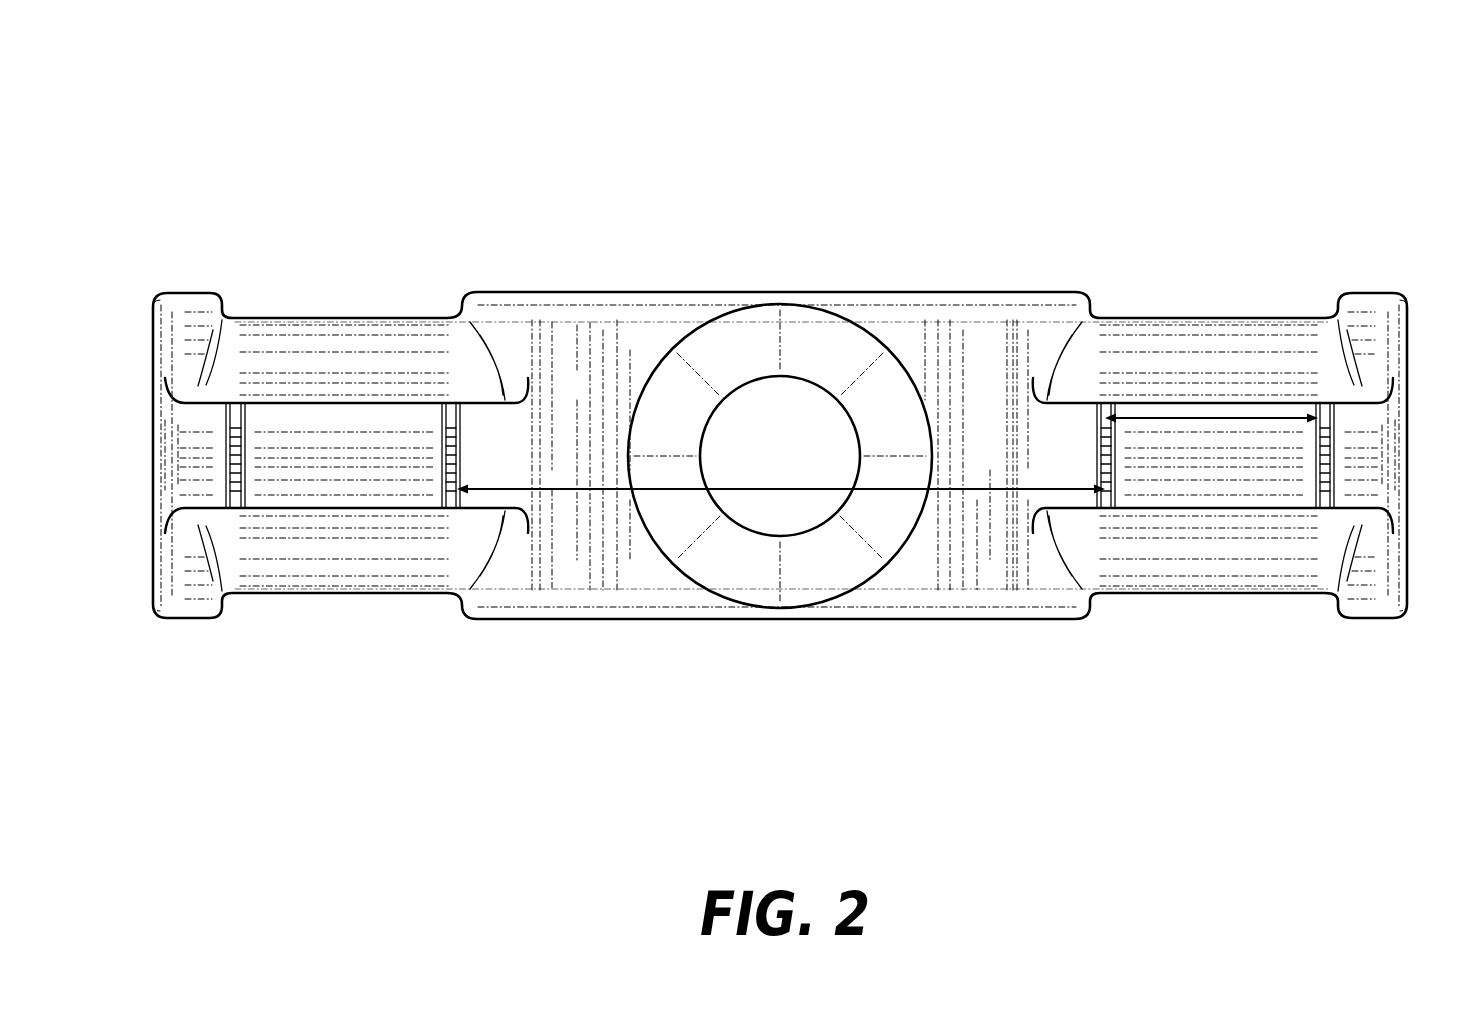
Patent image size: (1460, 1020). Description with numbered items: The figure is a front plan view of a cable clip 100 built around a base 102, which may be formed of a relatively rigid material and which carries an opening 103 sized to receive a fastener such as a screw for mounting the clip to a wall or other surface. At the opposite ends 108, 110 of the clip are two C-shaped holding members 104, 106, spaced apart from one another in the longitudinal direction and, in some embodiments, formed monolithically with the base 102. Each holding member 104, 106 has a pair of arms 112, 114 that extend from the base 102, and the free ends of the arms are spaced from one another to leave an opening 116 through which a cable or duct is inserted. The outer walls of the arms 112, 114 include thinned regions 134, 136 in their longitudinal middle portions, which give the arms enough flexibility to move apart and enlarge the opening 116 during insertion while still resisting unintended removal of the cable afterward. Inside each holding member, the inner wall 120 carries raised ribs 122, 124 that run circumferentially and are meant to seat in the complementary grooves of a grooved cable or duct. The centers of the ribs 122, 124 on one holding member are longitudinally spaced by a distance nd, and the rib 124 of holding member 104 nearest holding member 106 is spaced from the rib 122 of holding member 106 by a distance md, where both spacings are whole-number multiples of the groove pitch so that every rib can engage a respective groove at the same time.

The cable clip 100 is at (907, 62).
The base 102 is at (923, 292).
The opening 103 is at (763, 451).
The holding member 104 is at (193, 317).
The holding member 106 is at (1370, 318).
The end 108 is at (118, 598).
The end 110 is at (1436, 579).
The arm 112 is at (345, 373).
The arm 114 is at (360, 517).
The opening 116 is at (180, 467).
The inner wall 120 is at (498, 432).
The raised rib 122 is at (244, 472).
The raised rib 124 is at (446, 467).
The thinned region 134 is at (262, 290).
The thinned region 136 is at (280, 607).
The distance md is at (585, 490).
The distance nd is at (1220, 417).